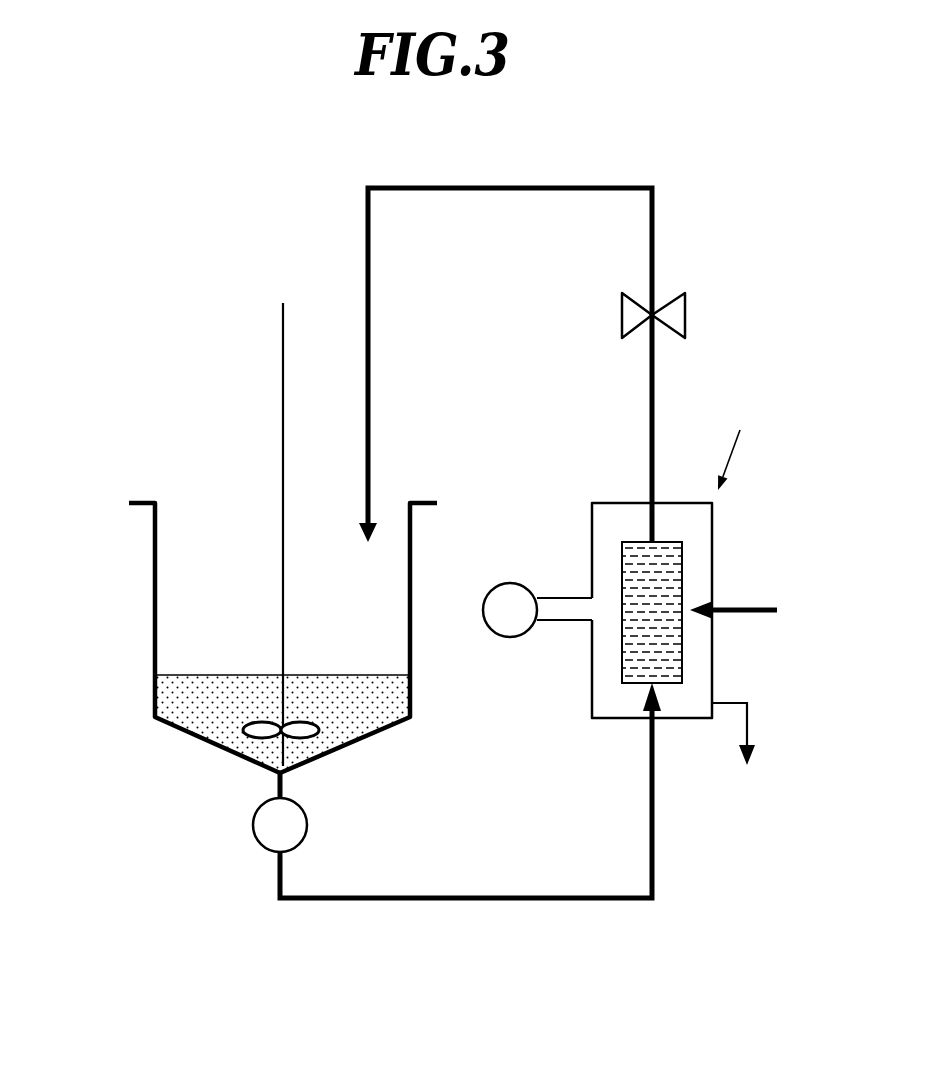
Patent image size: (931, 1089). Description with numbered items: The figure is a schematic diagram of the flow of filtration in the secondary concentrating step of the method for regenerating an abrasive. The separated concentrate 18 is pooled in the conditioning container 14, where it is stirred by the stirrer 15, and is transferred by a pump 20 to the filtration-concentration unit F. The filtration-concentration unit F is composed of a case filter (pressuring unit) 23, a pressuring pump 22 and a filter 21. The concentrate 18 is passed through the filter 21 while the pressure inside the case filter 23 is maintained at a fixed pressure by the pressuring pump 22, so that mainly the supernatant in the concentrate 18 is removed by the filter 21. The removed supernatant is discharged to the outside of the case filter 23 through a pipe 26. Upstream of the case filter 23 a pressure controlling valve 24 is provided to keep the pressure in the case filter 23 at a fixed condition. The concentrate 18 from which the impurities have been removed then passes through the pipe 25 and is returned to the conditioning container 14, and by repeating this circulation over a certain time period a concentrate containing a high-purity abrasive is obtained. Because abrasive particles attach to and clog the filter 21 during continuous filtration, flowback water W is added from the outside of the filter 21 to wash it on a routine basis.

The conditioning container 14 is at (155, 615).
The stirrer 15 is at (283, 343).
The concentrate 18 is at (197, 695).
The pump 20 is at (310, 815).
The filter 21 is at (668, 650).
The pressuring pump 22 is at (508, 583).
The case filter (pressuring unit) 23 is at (715, 562).
The pressure controlling valve 24 is at (685, 302).
The pipe 25 is at (517, 185).
The pipe 26 is at (737, 750).
The filtration-concentration unit F is at (738, 439).
The flowback water W is at (760, 614).